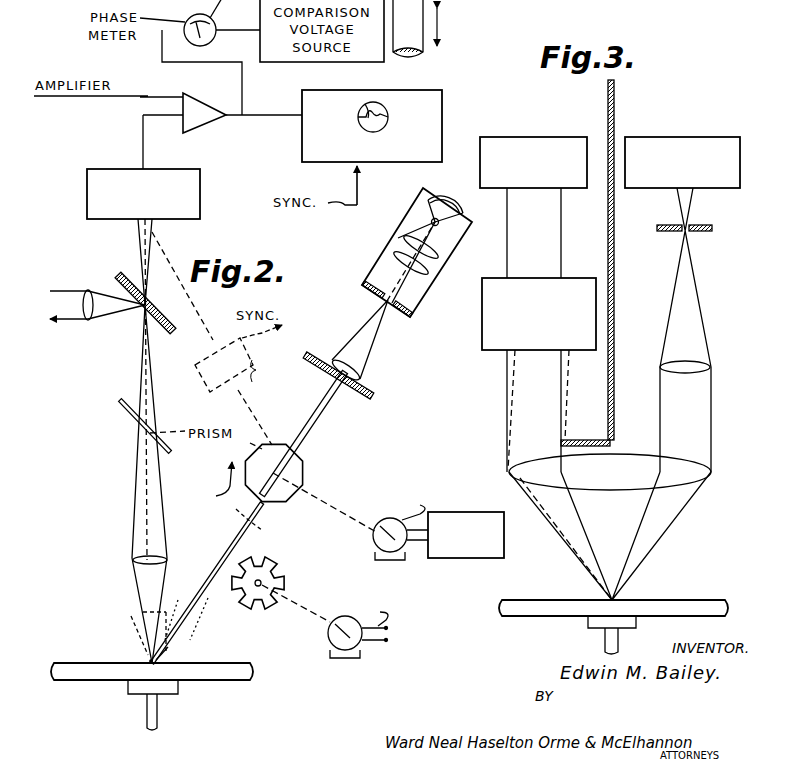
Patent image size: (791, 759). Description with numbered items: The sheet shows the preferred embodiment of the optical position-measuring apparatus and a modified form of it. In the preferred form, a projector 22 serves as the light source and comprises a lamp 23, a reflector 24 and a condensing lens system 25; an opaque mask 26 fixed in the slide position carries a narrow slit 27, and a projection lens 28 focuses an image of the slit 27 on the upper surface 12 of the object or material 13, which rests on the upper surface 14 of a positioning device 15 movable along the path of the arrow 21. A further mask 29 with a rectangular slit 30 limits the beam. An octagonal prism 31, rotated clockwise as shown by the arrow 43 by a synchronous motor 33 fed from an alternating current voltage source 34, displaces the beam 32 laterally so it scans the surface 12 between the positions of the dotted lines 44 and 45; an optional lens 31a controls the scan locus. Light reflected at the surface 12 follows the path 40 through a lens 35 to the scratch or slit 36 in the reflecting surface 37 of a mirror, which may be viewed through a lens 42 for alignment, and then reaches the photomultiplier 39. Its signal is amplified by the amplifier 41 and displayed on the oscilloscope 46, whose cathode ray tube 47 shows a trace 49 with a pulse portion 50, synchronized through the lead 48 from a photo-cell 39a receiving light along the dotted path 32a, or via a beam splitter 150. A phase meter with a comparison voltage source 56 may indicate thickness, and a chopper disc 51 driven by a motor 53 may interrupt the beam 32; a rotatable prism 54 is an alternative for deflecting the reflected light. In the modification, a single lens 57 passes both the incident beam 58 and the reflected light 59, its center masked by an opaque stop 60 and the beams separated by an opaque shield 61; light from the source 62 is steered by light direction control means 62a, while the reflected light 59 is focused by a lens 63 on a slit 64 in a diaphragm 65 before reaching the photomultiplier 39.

In FIG. 2, the upper surface 12 is at (230, 663).
In FIG. 3, the upper surface 12 is at (628, 600).
In FIG. 2, the object or material 13 is at (200, 680).
In FIG. 3, the object or material 13 is at (545, 608).
In FIG. 2, the upper surface of positioning device 14 is at (135, 680).
In FIG. 2, the positioning device 15 is at (146, 708).
In FIG. 3, the positioning device 15 is at (590, 624).
In FIG. 2, the arrow 21 is at (437, 22).
In FIG. 2, the projector 22 is at (372, 265).
In FIG. 2, the lamp 23 is at (455, 228).
In FIG. 2, the reflector 24 is at (438, 206).
In FIG. 2, the condensing lens system 25 is at (400, 241).
In FIG. 2, the opaque mask 26 is at (392, 316).
In FIG. 2, the slit 27 is at (380, 300).
In FIG. 2, the projection lens 28 is at (362, 370).
In FIG. 2, the further mask 29 is at (372, 396).
In FIG. 2, the rectangular slit 30 is at (337, 395).
In FIG. 2, the octagonal prism 31 is at (300, 468).
In FIG. 2, the lens 31a is at (238, 514).
In FIG. 2, the beam 32 is at (185, 603).
In FIG. 2, the path of reflected light 32a is at (238, 392).
In FIG. 2, the synchronous motor 33 is at (373, 538).
In FIG. 2, the alternating current voltage source 34 is at (446, 558).
In FIG. 2, the lens or lens system 35 is at (141, 557).
In FIG. 2, the scratch or slit 36 is at (114, 317).
In FIG. 2, the reflecting surface 37 is at (128, 290).
In FIG. 2, the photomultiplier 39 is at (200, 188).
In FIG. 3, the photomultiplier 39 is at (680, 137).
In FIG. 2, the photo-cell 39a is at (202, 373).
In FIG. 2, the path of reflected light 40 is at (158, 478).
In FIG. 2, the amplifier 41 is at (212, 94).
In FIG. 2, the lens 42 is at (83, 305).
In FIG. 2, the arrow 43 is at (213, 483).
In FIG. 2, the dotted line beam position 44 is at (165, 657).
In FIG. 2, the dotted line beam position 45 is at (147, 662).
In FIG. 2, the oscilloscope 46 is at (418, 90).
In FIG. 2, the cathode ray tube 47 is at (387, 114).
In FIG. 2, the lead 48 is at (355, 182).
In FIG. 2, the trace 49 is at (360, 116).
In FIG. 2, the portion of trace 50 is at (370, 102).
In FIG. 2, the opaque chopper disc 51 is at (252, 576).
In FIG. 2, the motor 53 is at (328, 640).
In FIG. 2, the rotatable prism 54 is at (134, 612).
In FIG. 2, the comparison voltage source 56 is at (270, 573).
In FIG. 3, the single lens 57 is at (681, 465).
In FIG. 3, the incident light beam 58 is at (568, 546).
In FIG. 3, the reflected light 59 is at (673, 526).
In FIG. 3, the opaque stop 60 is at (583, 440).
In FIG. 3, the opaque shield 61 is at (616, 250).
In FIG. 3, the light source 62 is at (523, 137).
In FIG. 3, the light direction control means 62a is at (485, 350).
In FIG. 3, the lens or lens system 63 is at (706, 365).
In FIG. 3, the slit 64 is at (692, 232).
In FIG. 3, the diaphragm or mask 65 is at (714, 225).
In FIG. 2, the beam splitter 150 is at (140, 425).